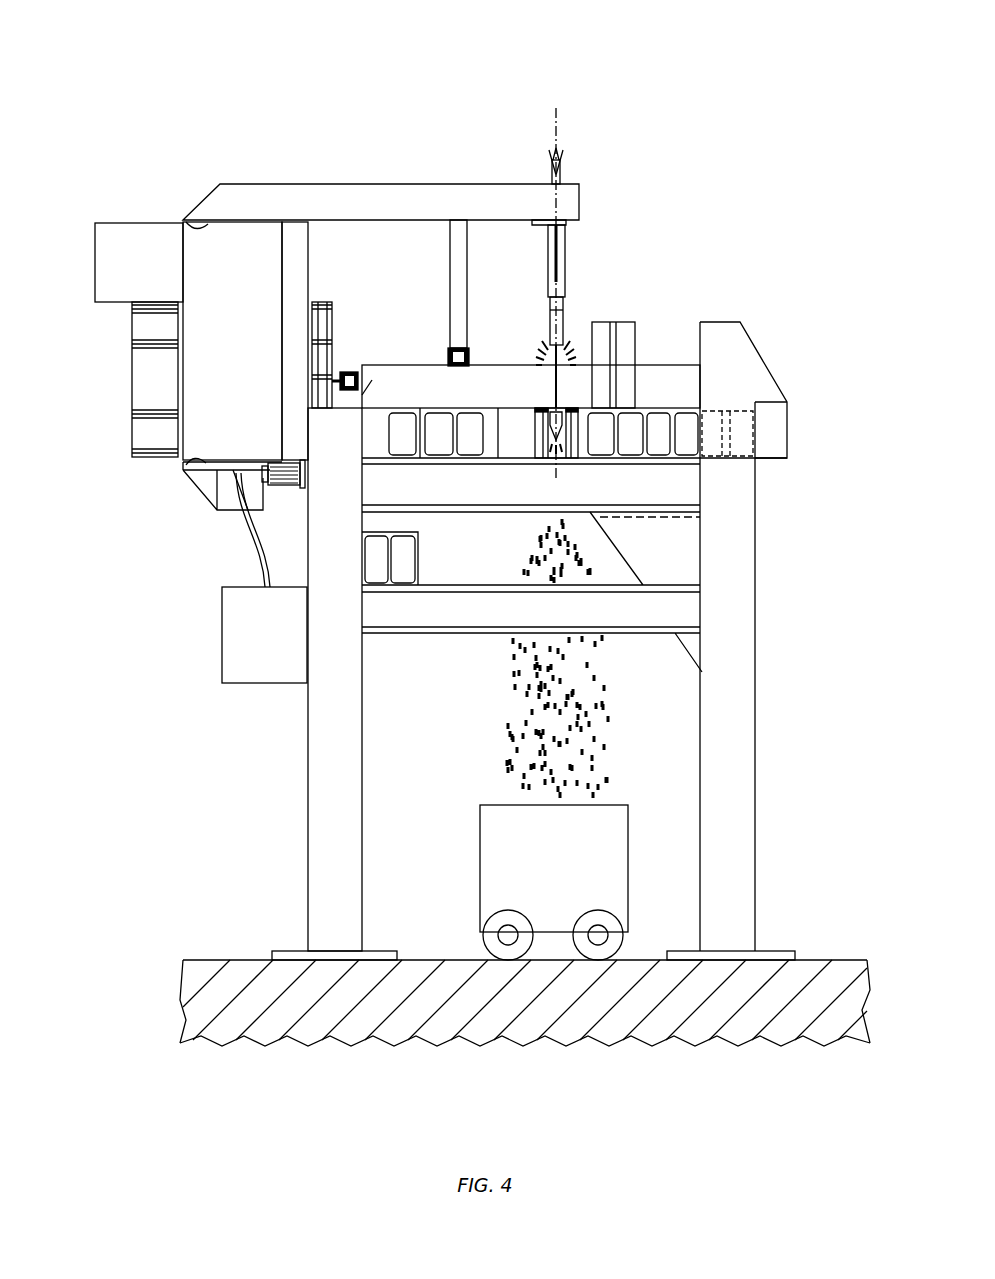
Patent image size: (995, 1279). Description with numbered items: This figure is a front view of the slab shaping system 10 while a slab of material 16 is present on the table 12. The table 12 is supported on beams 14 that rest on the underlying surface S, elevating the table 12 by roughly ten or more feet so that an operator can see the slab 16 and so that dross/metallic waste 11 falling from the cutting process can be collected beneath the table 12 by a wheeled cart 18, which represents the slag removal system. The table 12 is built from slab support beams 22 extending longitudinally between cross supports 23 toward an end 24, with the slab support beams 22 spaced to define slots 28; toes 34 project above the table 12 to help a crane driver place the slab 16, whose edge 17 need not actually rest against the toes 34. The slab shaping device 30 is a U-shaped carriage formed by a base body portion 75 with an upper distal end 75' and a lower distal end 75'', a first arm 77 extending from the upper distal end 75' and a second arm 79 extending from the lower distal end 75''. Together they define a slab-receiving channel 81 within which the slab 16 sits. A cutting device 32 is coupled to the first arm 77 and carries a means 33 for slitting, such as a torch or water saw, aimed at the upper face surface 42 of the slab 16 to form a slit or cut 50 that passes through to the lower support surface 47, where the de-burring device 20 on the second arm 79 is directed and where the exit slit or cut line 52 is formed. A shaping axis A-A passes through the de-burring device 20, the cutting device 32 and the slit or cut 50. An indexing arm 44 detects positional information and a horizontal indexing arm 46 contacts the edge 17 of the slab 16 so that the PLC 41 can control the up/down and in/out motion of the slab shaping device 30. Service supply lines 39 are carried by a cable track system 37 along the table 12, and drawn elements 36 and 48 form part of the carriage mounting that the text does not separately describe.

The slab shaping system 10 is at (302, 100).
The first arm 77 is at (304, 196).
The upper distal end 75' is at (161, 195).
The PLC 41 is at (108, 222).
The base body portion 75 is at (202, 346).
The slab shaping device 30 is at (208, 410).
The lower distal end 75'' is at (164, 490).
The second arm 79 is at (268, 500).
The service supply lines 39 is at (262, 572).
The connector 36 is at (284, 486).
The cable track system 37 is at (222, 612).
The beams 14 is at (308, 757).
The toes 34 is at (730, 365).
The horizontal slab shaping device indexing arm 46 is at (342, 372).
The mounting plate 48 is at (456, 394).
The edge 17 is at (364, 396).
The slab support beams 22 is at (447, 420).
The slab of material 16 is at (613, 332).
The indexing arm 44 is at (452, 290).
The upper face surface 42 is at (470, 358).
The shaping axis A is at (555, 292).
The cutting device 32 is at (577, 256).
The means for slitting or cutting 33 is at (551, 328).
The slit or cut 50 is at (566, 382).
The slab-receiving channel 81 is at (580, 400).
The de-burring device 20 is at (568, 458).
The exit slit or cut line 52 is at (548, 410).
The cross supports 23 is at (425, 496).
The lower support surface 47 is at (500, 410).
The slots 28 is at (514, 435).
The table 12 is at (678, 533).
The end 24 is at (437, 648).
The dross/metallic waste 11 is at (504, 735).
The wheeled cart 18 is at (481, 832).
The underlying surface S is at (225, 960).